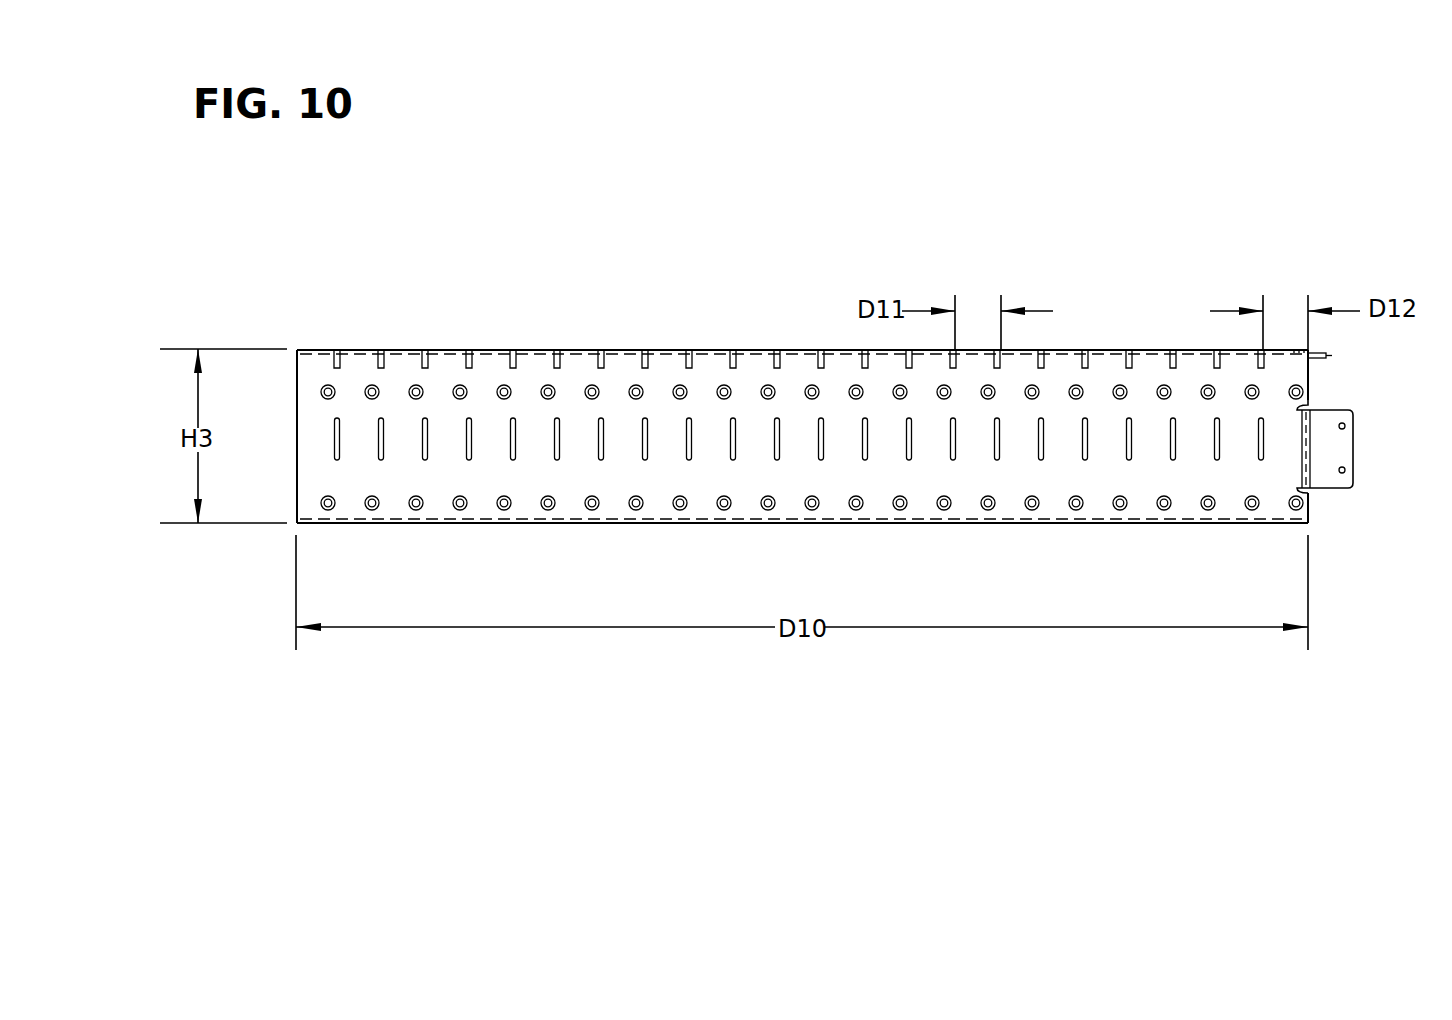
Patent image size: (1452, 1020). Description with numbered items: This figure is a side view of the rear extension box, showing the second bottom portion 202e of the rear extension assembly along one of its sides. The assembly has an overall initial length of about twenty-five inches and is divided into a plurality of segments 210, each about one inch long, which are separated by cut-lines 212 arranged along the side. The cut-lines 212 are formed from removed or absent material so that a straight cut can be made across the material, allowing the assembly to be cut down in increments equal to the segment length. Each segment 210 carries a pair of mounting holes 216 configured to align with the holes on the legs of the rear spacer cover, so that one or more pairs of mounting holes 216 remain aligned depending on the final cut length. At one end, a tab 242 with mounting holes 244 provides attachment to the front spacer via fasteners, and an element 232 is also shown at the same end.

The second bottom portion 202e is at (358, 430).
The segments 210 is at (1012, 400).
The cut-lines 212 is at (597, 358).
The mounting holes 216 is at (811, 386).
The tab 232 is at (1290, 370).
The tab 242 is at (1326, 480).
The mounting holes 244 is at (1345, 427).